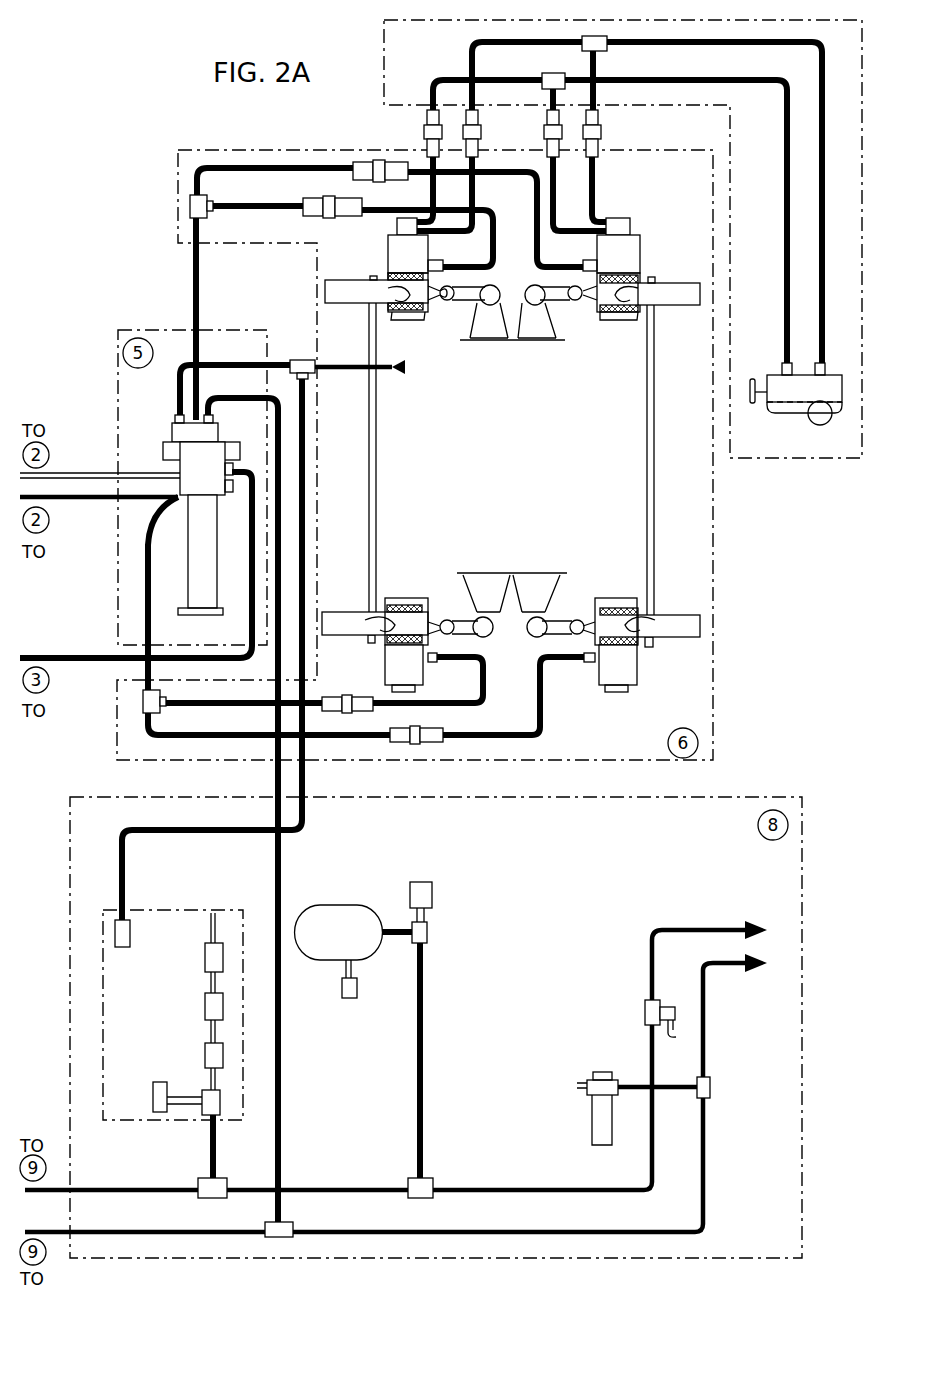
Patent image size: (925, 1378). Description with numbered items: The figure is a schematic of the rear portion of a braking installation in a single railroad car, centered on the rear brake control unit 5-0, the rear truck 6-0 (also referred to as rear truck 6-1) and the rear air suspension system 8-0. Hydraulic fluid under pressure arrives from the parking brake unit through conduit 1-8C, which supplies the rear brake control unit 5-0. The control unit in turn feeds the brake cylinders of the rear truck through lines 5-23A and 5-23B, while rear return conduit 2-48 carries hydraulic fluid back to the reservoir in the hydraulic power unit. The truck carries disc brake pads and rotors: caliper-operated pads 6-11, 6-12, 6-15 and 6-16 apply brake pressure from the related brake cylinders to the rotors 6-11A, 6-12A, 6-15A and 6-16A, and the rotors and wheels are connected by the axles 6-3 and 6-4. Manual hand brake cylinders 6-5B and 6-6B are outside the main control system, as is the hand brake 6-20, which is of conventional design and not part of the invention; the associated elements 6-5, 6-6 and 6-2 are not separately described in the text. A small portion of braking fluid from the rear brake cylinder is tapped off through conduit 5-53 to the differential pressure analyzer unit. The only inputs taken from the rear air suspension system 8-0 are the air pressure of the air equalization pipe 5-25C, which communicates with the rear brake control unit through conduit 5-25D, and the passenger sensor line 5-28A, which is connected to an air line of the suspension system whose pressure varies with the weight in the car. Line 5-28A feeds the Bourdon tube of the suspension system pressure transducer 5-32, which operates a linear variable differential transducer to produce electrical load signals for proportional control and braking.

The rear brake control unit 5-0 is at (118, 383).
The rear return conduit 2-48 is at (130, 470).
The conduit 1-8C is at (160, 502).
The line 5-23B is at (193, 345).
The passenger sensor line 5-28A is at (213, 362).
The conduit 5-25D is at (243, 396).
The line 5-23A is at (148, 580).
The conduit 5-53 is at (95, 656).
The manual hand brake cylinder 6-6B is at (397, 227).
The valve 6-6 is at (388, 256).
The rotor 6-16A is at (330, 295).
The caliper-operated pad 6-16 is at (388, 293).
The manual hand brake cylinder 6-5B is at (613, 220).
The valve 6-5 is at (640, 250).
The caliper-operated pad 6-15 is at (625, 295).
The rotor 6-15A is at (678, 305).
The axle 6-4 is at (377, 470).
The axle 6-3 is at (647, 470).
The hand brake 6-20 is at (835, 462).
The rotor 6-12A is at (340, 612).
The caliper-operated pad 6-12 is at (363, 612).
The rotor 6-11A is at (670, 615).
The caliper-operated pad 6-11 is at (598, 612).
The valve 6-2 is at (395, 665).
The rear truck 6-1 is at (620, 665).
The rear truck 6-0 is at (713, 710).
The suspension system pressure transducer 5-32 is at (130, 925).
The rear air suspension system 8-0 is at (805, 897).
The air equalization pipe 5-25C is at (95, 1230).